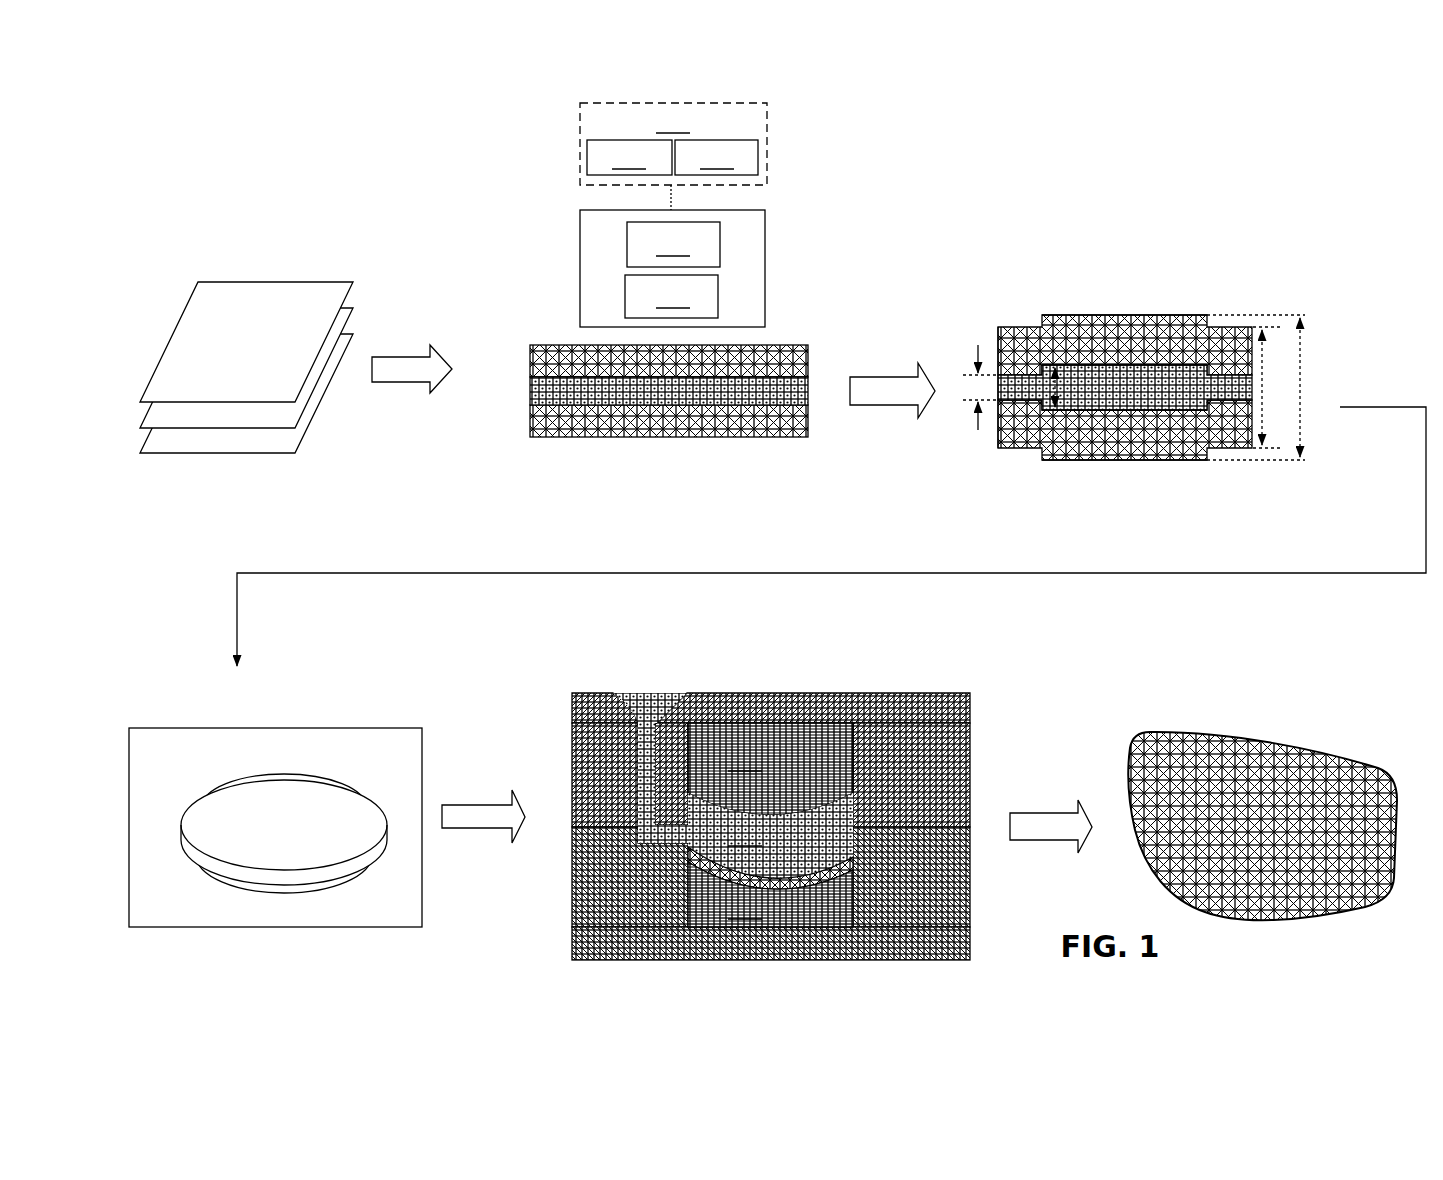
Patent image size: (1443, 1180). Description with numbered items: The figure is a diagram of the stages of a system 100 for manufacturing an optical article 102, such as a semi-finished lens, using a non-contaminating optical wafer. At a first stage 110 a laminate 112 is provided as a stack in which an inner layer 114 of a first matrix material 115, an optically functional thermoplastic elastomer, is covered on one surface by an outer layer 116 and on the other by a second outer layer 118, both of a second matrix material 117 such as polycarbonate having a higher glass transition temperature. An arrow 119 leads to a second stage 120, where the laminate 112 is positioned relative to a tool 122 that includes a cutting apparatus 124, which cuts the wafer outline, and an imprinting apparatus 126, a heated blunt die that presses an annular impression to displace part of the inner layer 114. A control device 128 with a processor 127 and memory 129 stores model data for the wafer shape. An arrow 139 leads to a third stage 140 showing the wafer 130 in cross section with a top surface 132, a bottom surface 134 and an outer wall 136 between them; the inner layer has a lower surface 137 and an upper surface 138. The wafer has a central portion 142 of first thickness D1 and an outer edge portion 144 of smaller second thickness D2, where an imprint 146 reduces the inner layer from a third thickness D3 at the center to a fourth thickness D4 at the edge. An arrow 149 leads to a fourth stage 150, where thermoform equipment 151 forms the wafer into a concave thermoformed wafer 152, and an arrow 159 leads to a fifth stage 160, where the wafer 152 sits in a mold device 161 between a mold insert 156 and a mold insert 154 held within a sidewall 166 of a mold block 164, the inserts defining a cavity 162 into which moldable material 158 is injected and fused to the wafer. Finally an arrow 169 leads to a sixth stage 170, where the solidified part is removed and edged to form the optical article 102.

The system 100 is at (183, 158).
The first stage 110 is at (265, 351).
The laminate 112 is at (217, 307).
The inner layer 114 is at (357, 300).
The outer layer 116 is at (183, 452).
The second outer layer 118 is at (178, 325).
The arrow 119 is at (422, 355).
The second stage 120 is at (661, 215).
The tool 122 is at (712, 268).
The cutting apparatus 124 is at (673, 244).
The imprinting apparatus 126 is at (671, 296).
The processor 127 is at (629, 157).
The control device 128 is at (673, 144).
The memory 129 is at (716, 157).
The first matrix material 115 is at (568, 392).
The second matrix material 117 is at (565, 360).
The arrow 139 is at (897, 377).
The third stage 140 is at (1119, 298).
The wafer 130 is at (705, 572).
The top surface 132 is at (1187, 315).
The bottom surface 134 is at (1193, 460).
The outer wall 136 is at (995, 337).
The lower surface 137 is at (1148, 413).
The upper surface 138 is at (1150, 360).
The central portion 142 is at (1143, 303).
The outer edge portion 144 is at (998, 432).
The imprint 146 is at (1020, 323).
The first thickness D1 is at (1272, 387).
The second thickness D2 is at (1272, 387).
The third thickness D3 is at (1070, 387).
The fourth thickness D4 is at (980, 387).
The arrow 149 is at (625, 572).
The fourth stage 150 is at (265, 786).
The thermoform equipment 151 is at (345, 728).
The arrow 159 is at (495, 800).
The fifth stage 160 is at (756, 776).
The mold device 161 is at (803, 810).
The mold block 164 is at (963, 750).
The sidewall 166 is at (688, 735).
The moldable material 158 is at (649, 703).
The mold insert 156 is at (770, 769).
The cavity 162 is at (770, 835).
The thermoformed wafer 152 is at (848, 857).
The mold insert 154 is at (770, 894).
The arrow 169 is at (1062, 813).
The sixth stage 170 is at (1272, 780).
The optical article 102 is at (1352, 745).